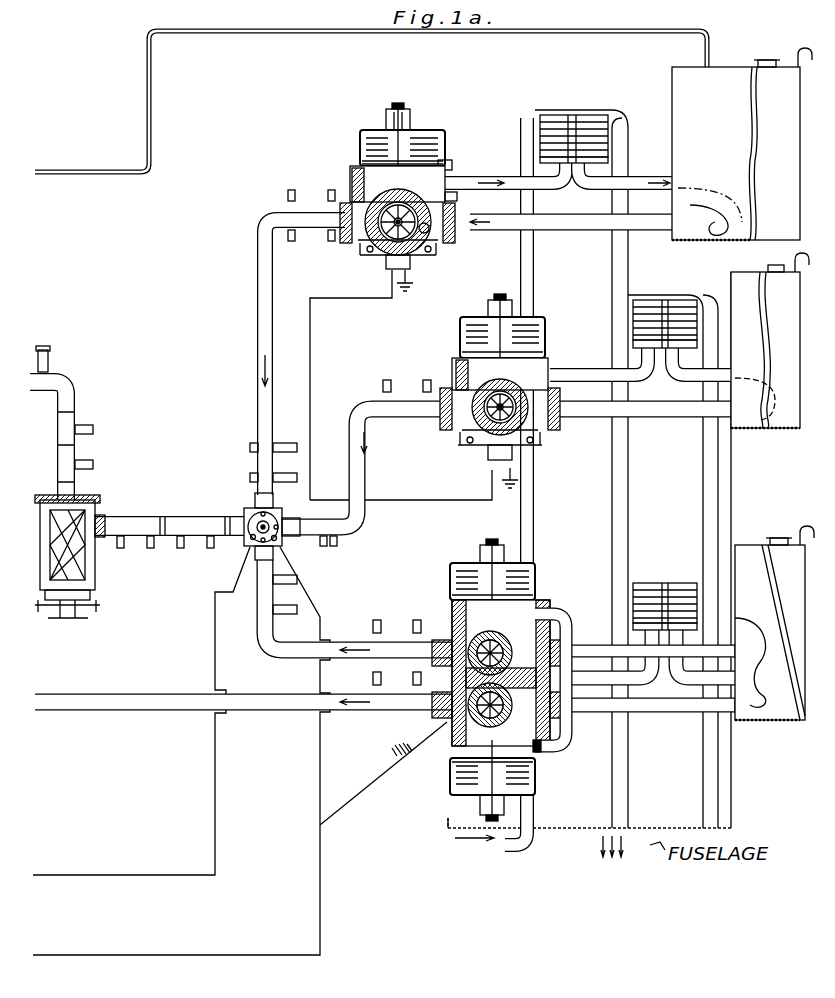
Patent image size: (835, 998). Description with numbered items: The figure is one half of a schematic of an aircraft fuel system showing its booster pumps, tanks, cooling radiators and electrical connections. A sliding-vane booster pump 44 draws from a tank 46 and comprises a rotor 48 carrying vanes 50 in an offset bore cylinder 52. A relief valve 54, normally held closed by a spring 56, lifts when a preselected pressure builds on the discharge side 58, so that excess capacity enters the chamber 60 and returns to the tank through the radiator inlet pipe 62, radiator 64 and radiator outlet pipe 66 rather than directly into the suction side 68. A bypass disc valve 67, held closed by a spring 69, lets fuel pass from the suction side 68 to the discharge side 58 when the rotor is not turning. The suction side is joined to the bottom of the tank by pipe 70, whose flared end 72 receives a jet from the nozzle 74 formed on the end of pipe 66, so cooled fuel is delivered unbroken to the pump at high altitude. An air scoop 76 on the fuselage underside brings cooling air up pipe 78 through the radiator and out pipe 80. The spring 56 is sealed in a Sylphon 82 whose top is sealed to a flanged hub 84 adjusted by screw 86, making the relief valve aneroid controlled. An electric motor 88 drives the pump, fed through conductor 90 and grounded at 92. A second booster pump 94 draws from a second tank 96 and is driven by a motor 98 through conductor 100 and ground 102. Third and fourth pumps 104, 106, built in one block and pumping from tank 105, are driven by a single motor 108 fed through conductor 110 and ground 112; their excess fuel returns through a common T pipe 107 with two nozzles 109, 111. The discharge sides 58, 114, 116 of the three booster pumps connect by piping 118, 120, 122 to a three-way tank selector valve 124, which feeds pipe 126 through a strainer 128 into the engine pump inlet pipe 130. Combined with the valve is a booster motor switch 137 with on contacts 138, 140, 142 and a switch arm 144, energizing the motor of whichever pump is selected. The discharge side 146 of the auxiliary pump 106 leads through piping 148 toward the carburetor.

The booster pump 44 is at (447, 170).
The tank 46 is at (770, 232).
The rotor 48 is at (368, 250).
The vanes 50 is at (388, 244).
The offset bore cylinder 52 is at (446, 245).
The relief valve 54 is at (355, 172).
The spring 56 is at (362, 133).
The discharge side 58 is at (345, 205).
The chamber 60 is at (440, 158).
The radiator inlet pipe 62 is at (465, 180).
The radiator 64 is at (572, 115).
The radiator outlet pipe 66 is at (640, 176).
The disc valve 67 is at (457, 197).
The suction side 68 is at (430, 232).
The spring 69 is at (450, 162).
The pipe 70 is at (655, 232).
The flared end 72 is at (684, 240).
The nozzle 74 is at (742, 205).
The air scoop 76 is at (500, 838).
The pipe 78 is at (528, 286).
The pipe 80 is at (618, 286).
The Sylphon 82 is at (366, 144).
The flanged hub 84 is at (412, 128).
The screw 86 is at (390, 106).
The electric motor 88 is at (410, 258).
The conductor 90 is at (380, 298).
The ground 92 is at (407, 300).
The second booster pump 94 is at (540, 318).
The second tank 96 is at (745, 428).
The electric motor 98 is at (475, 447).
The conductor 100 is at (468, 500).
The ground 102 is at (500, 484).
The third pump 104 is at (542, 606).
The tank 105 is at (778, 722).
The fourth pump 106 is at (545, 750).
The common T pipe 107 is at (582, 672).
The motor 108 is at (452, 622).
The nozzle 109 is at (768, 630).
The conductor 110 is at (165, 955).
The nozzle 111 is at (748, 720).
The ground 112 is at (392, 751).
The discharge side 114 is at (462, 380).
The discharge side 116 is at (450, 598).
The piping 118 is at (257, 394).
The piping 120 is at (372, 476).
The piping 122 is at (350, 634).
The three-way tank selector valve 124 is at (250, 512).
The pipe 126 is at (190, 511).
The strainer 128 is at (92, 577).
The inlet pipe 130 is at (74, 424).
The electric booster motor switch 137 is at (282, 550).
The on contact 138 is at (262, 513).
The on contact 140 is at (300, 527).
The on contact 142 is at (252, 540).
The switch arm 144 is at (250, 545).
The discharge side 146 is at (440, 718).
The piping 148 is at (300, 711).